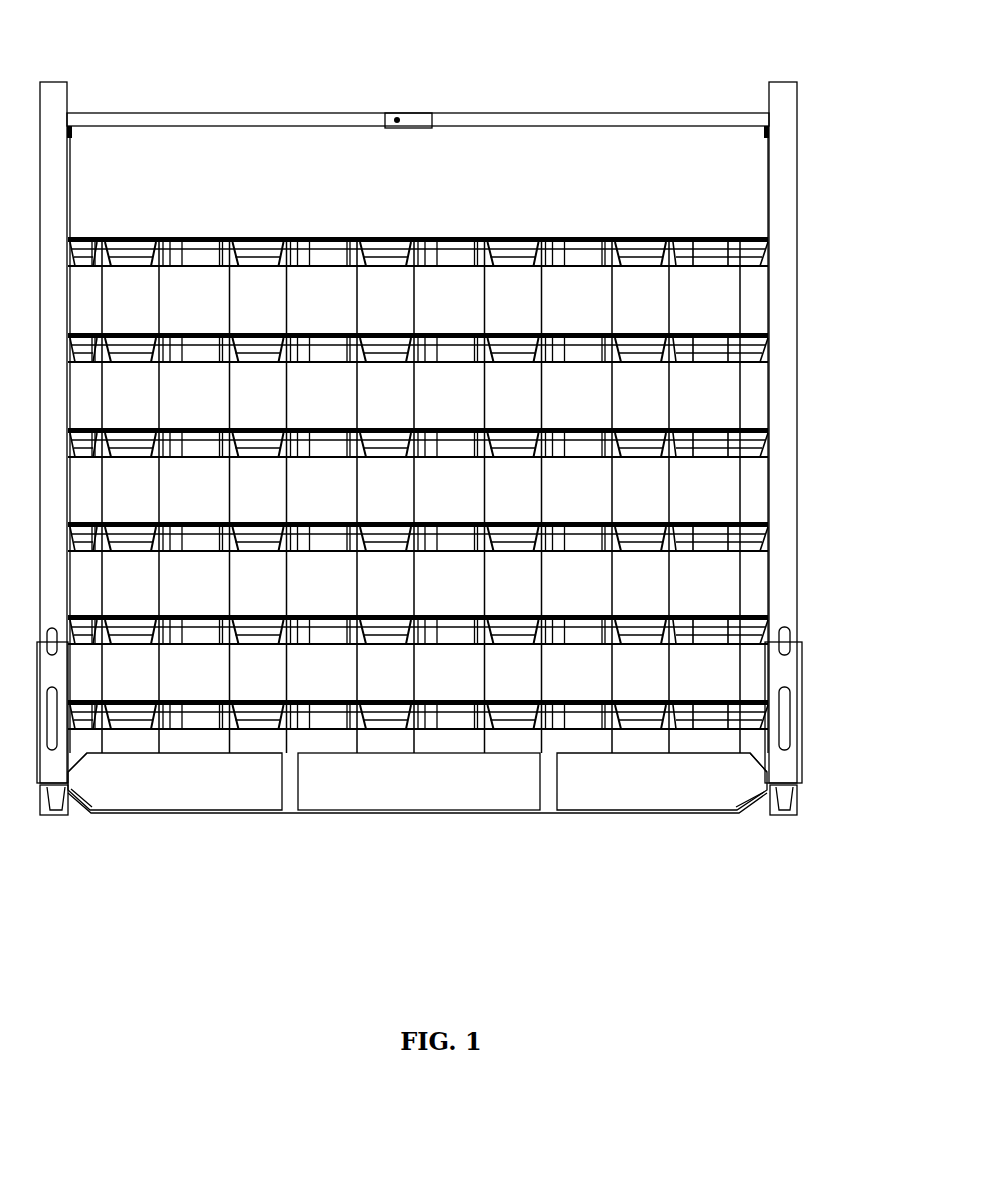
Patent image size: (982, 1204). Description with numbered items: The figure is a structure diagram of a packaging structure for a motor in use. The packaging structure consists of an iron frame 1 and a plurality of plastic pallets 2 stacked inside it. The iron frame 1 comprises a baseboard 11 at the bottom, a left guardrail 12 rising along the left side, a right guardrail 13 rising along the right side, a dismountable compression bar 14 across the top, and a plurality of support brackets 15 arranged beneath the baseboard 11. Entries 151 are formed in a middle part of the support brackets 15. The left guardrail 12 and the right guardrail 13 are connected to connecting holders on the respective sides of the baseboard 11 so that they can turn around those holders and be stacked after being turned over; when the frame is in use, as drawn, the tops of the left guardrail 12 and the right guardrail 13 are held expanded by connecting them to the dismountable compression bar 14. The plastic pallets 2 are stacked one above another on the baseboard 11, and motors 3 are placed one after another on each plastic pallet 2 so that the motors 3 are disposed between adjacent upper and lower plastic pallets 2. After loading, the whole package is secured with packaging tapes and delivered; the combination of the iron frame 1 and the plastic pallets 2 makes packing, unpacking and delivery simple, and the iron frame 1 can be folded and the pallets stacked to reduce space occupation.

The iron frame 1 is at (466, 466).
The baseboard 11 is at (373, 742).
The left guardrail 12 is at (52, 98).
The right guardrail 13 is at (787, 102).
The dismountable compression bar 14 is at (298, 120).
The support bracket 15 is at (290, 779).
The entry 151 is at (627, 783).
The plastic pallet 2 is at (750, 248).
The motor 3 is at (647, 308).